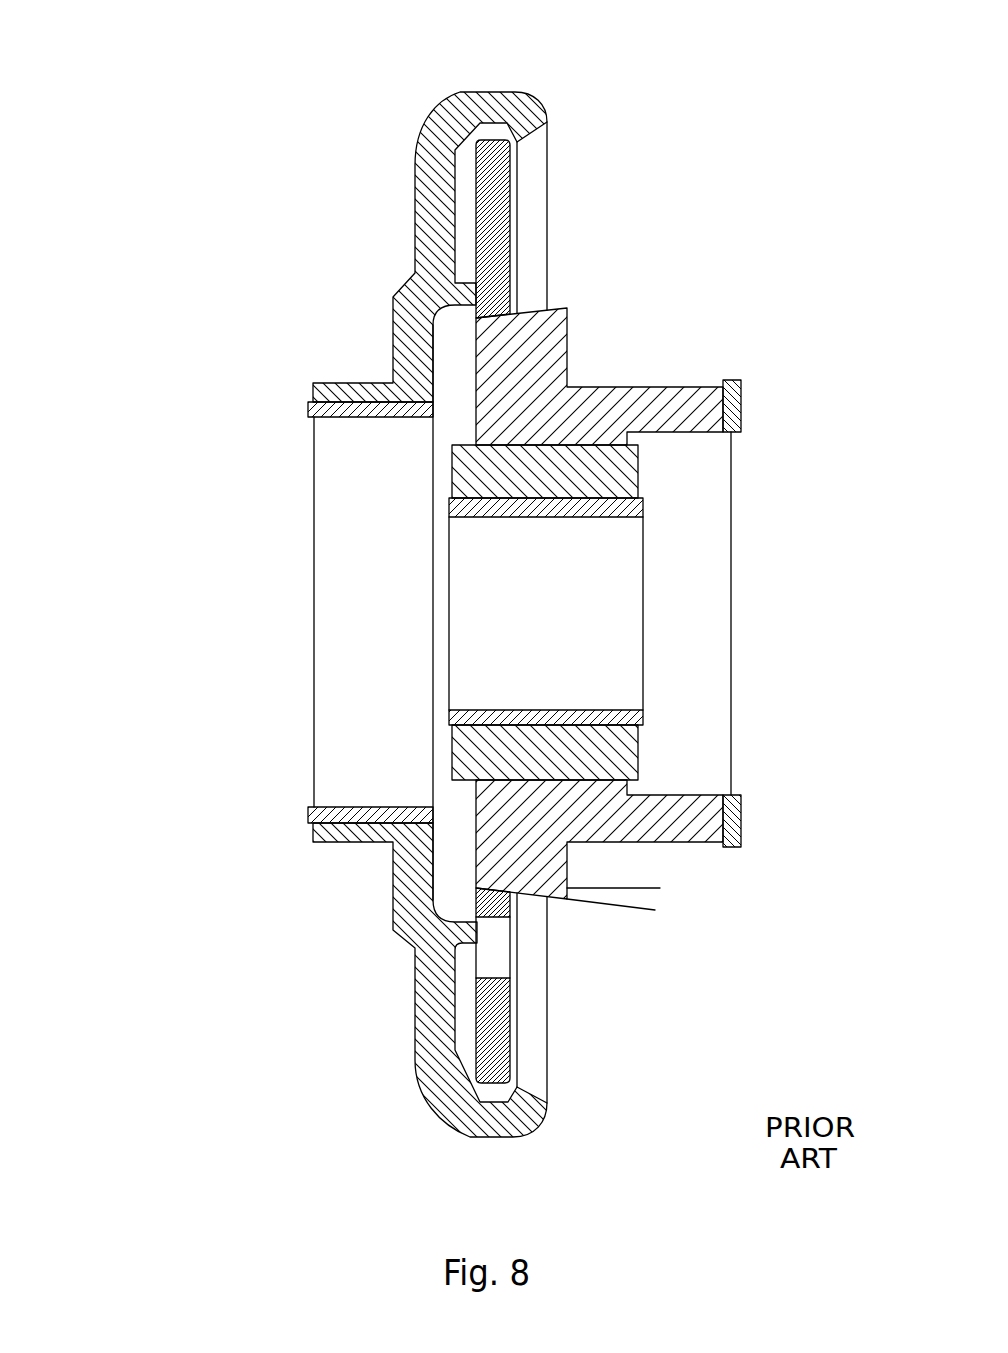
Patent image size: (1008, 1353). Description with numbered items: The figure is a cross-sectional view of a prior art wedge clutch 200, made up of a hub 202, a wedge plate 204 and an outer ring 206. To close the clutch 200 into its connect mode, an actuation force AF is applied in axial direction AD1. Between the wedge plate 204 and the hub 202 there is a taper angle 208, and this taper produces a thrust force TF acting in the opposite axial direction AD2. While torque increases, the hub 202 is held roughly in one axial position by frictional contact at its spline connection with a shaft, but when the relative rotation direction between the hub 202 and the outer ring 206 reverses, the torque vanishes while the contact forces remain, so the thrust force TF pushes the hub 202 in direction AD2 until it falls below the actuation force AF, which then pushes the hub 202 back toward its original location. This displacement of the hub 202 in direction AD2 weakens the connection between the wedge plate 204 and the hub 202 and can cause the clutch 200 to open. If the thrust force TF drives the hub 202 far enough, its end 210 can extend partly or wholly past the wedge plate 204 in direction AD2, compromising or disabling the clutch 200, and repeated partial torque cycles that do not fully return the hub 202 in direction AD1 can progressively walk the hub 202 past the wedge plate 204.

The wedge clutch 200 is at (720, 93).
The hub 202 is at (688, 385).
The wedge plate 204 is at (513, 182).
The outer ring 206 is at (497, 90).
The taper angle 208 is at (632, 857).
The end 210 is at (473, 352).
The actuation force AF is at (568, 328).
The thrust force TF is at (475, 863).
The axial direction AD1 is at (83, 1098).
The axial direction AD2 is at (82, 1133).